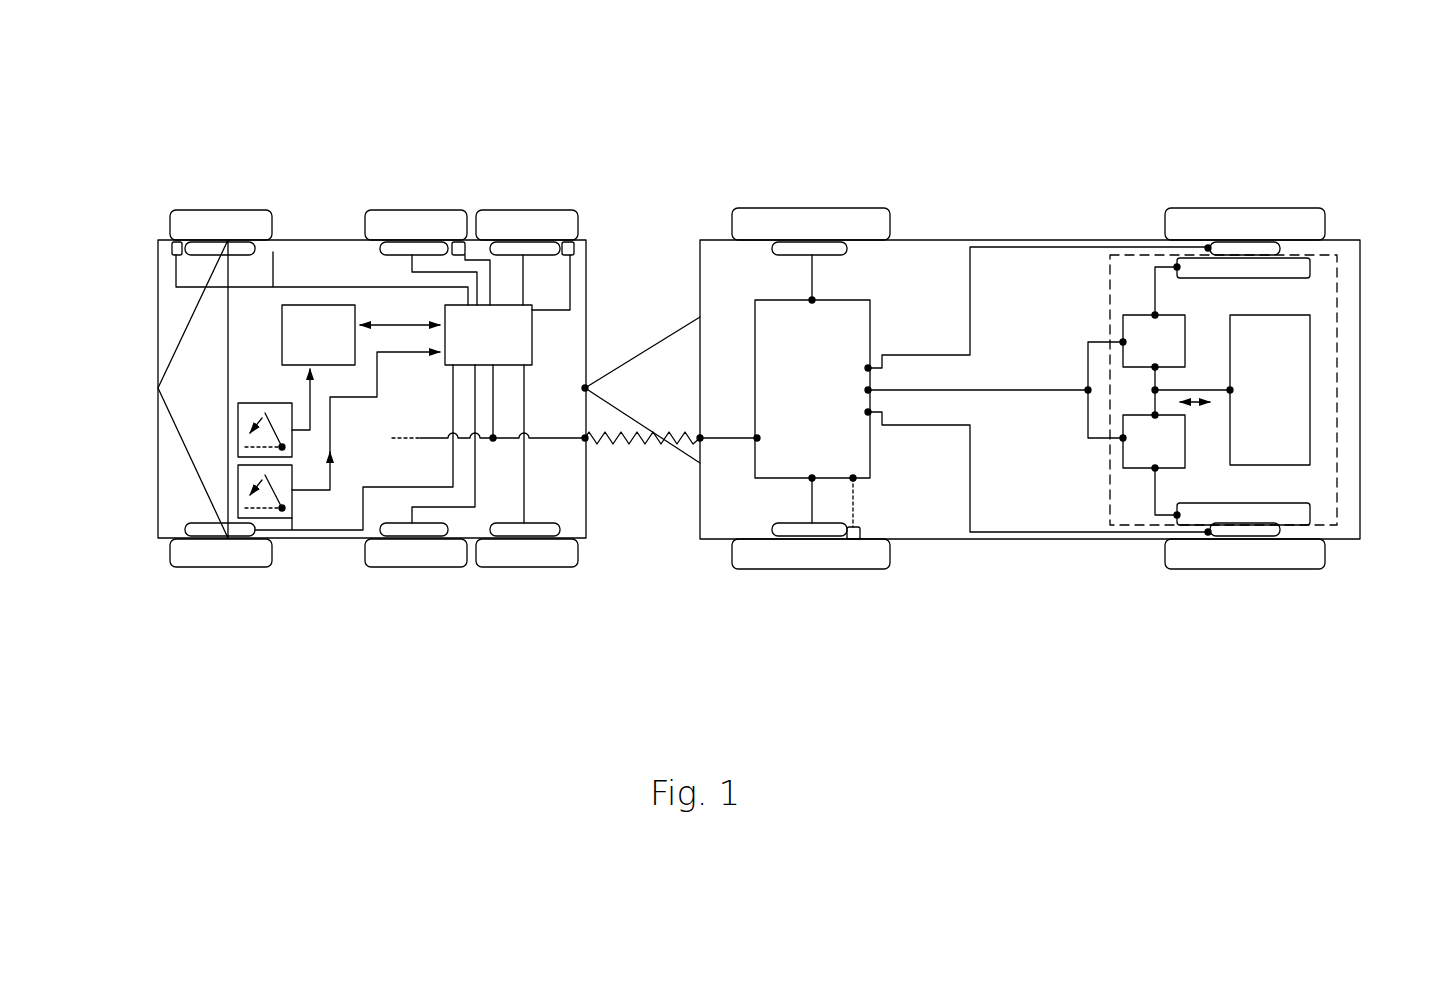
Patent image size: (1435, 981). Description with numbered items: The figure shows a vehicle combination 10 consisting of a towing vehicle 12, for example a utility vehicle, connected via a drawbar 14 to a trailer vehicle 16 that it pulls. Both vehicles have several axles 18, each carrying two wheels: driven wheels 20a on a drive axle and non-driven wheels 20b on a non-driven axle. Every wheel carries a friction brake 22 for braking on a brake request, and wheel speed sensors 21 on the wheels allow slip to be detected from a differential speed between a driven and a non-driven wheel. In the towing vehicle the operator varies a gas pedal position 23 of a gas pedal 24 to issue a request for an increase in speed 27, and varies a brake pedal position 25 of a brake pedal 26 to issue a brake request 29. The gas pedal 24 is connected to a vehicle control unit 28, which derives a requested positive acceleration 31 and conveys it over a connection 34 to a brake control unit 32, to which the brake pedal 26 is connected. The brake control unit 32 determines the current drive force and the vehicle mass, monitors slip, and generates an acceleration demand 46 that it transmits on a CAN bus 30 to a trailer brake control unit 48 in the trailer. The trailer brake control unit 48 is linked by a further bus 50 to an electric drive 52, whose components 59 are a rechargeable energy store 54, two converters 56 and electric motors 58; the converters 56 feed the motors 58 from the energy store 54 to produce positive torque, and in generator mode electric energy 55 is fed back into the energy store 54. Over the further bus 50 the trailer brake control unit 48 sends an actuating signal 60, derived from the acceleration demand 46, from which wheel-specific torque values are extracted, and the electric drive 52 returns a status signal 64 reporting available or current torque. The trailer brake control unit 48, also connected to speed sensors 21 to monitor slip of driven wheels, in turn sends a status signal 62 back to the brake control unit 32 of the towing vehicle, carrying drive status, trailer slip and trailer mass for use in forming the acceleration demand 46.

The vehicle combination 10 is at (822, 92).
The towing vehicle 12 is at (365, 125).
The drawbar 14 is at (630, 360).
The trailer vehicle 16 is at (1217, 135).
The axle 18 is at (222, 648).
The driven wheel 20a is at (405, 228).
The non-driven wheel 20b is at (235, 225).
The wheel speed sensor 21 is at (172, 248).
The friction brake 22 is at (205, 245).
The gas pedal position 23 is at (238, 432).
The gas pedal 24 is at (252, 400).
The brake pedal position 25 is at (238, 492).
The brake pedal 26 is at (272, 555).
The request for an increase in speed 27 is at (305, 405).
The vehicle control unit 28 is at (318, 335).
The brake request 29 is at (338, 456).
The CAN-ISO 11992-2 bus 30 is at (420, 438).
The requested positive acceleration 31 is at (400, 305).
The brake control unit 32 is at (488, 335).
The connection 34 is at (368, 322).
The acceleration demand 46 is at (570, 452).
The trailer brake control unit 48 is at (812, 389).
The further bus 50 is at (940, 390).
The electric drive 52 is at (1338, 318).
The energy store 54 is at (1270, 390).
The electric energy 55 is at (1192, 405).
The converter 56 is at (1154, 391).
The electric motor 58 is at (1315, 265).
The components 59 is at (1325, 392).
The actuating signal 60 is at (1063, 372).
The status signal 62 is at (723, 427).
The status signal 64 is at (1040, 403).